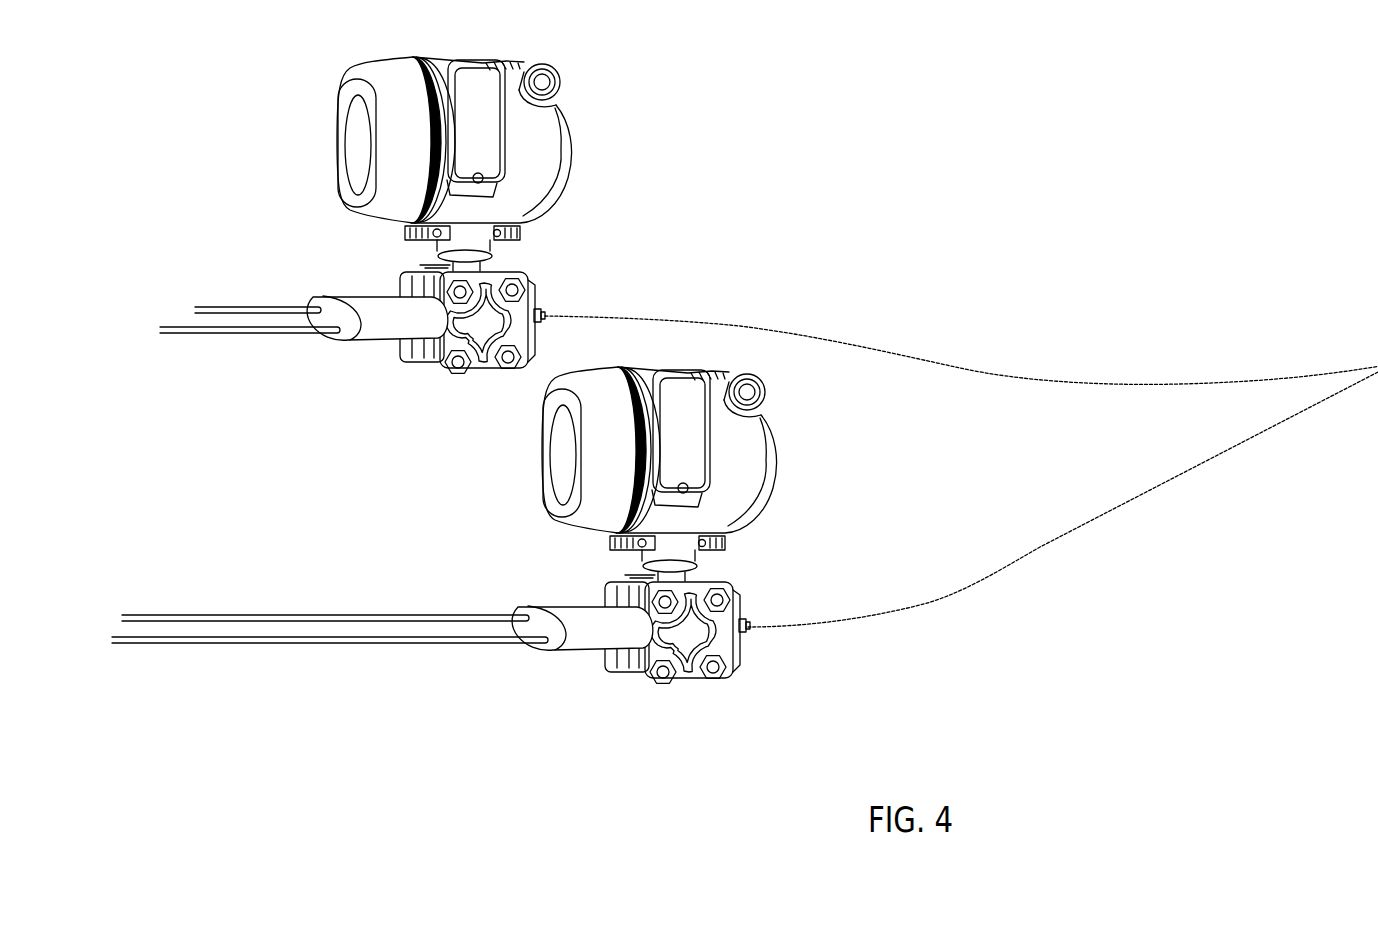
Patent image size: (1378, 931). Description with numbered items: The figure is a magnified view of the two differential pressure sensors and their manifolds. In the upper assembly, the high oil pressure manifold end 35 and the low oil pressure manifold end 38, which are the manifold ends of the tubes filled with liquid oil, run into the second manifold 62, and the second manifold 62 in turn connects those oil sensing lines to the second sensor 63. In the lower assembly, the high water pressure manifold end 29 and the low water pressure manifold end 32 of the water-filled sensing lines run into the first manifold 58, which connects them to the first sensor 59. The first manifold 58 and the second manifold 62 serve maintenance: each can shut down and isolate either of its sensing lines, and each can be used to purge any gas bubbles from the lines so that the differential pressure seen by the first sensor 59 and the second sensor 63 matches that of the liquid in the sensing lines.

The high water pressure manifold end 29 is at (526, 618).
The low water pressure manifold end 32 is at (528, 640).
The high oil pressure manifold end 35 is at (318, 309).
The low oil pressure manifold end 38 is at (327, 331).
The first manifold 58 is at (587, 642).
The first sensor 59 is at (758, 457).
The second manifold 62 is at (385, 330).
The second sensor 63 is at (553, 147).